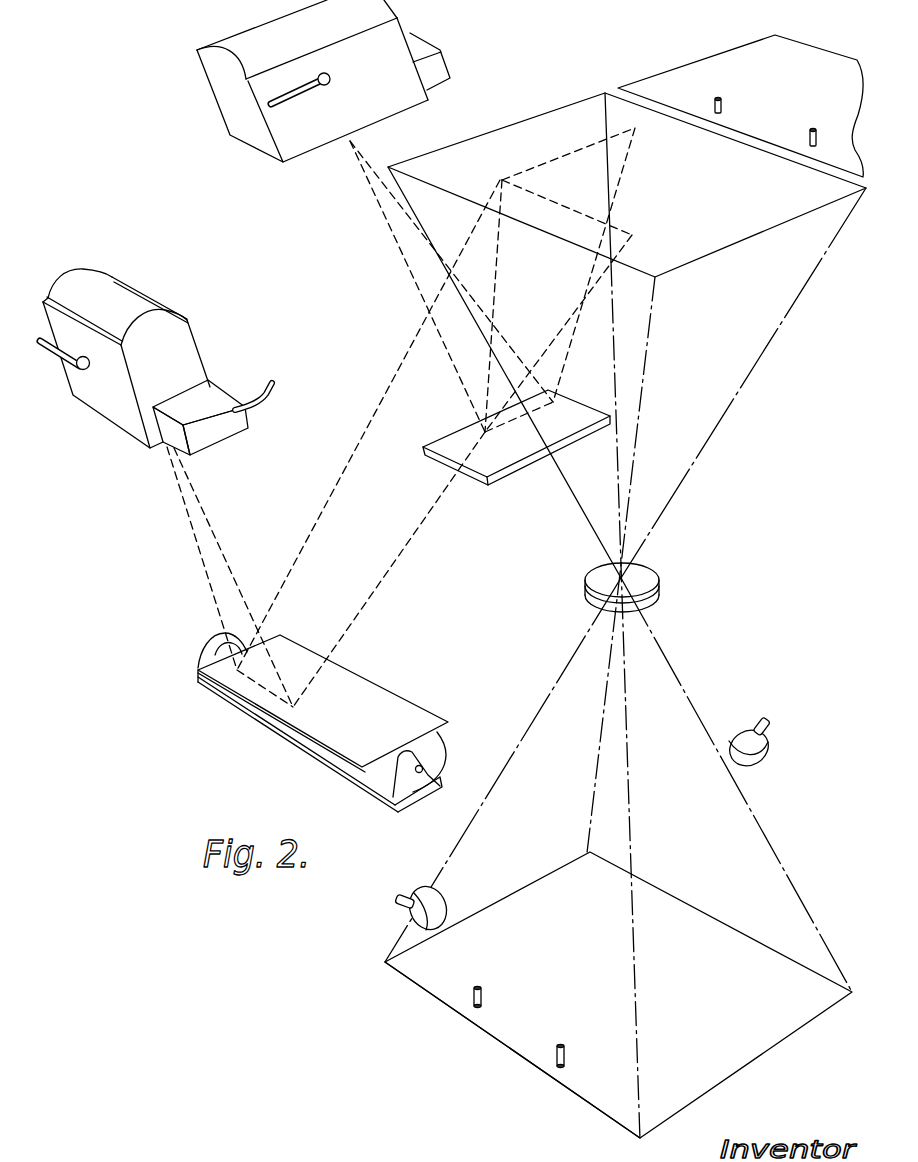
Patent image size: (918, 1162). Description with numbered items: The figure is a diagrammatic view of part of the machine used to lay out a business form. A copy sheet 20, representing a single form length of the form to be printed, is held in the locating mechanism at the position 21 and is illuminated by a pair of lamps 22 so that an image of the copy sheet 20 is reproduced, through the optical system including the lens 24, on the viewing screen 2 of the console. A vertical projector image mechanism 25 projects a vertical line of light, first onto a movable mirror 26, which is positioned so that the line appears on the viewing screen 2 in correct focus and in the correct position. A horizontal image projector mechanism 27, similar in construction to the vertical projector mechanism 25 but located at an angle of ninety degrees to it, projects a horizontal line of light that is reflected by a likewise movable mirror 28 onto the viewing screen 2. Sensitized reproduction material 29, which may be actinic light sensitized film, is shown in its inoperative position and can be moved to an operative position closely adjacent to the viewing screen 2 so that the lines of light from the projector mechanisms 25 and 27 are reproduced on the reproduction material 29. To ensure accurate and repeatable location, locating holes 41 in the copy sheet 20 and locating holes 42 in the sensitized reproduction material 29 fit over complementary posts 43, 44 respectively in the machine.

The viewing screen 2 is at (725, 232).
The copy sheet 20 is at (767, 1040).
The locating mechanism position 21 is at (442, 990).
The lamps 22 is at (432, 895).
The lens 24 is at (647, 583).
The vertical projector image mechanism 25 is at (108, 413).
The movable mirror 26 is at (303, 648).
The horizontal image projector mechanism 27 is at (308, 142).
The mirror 28 is at (555, 438).
The sensitized reproduction material 29 is at (752, 53).
The locating holes 41 is at (477, 1008).
The locating holes 42 is at (721, 112).
The posts 43 is at (483, 993).
The posts 44 is at (812, 131).